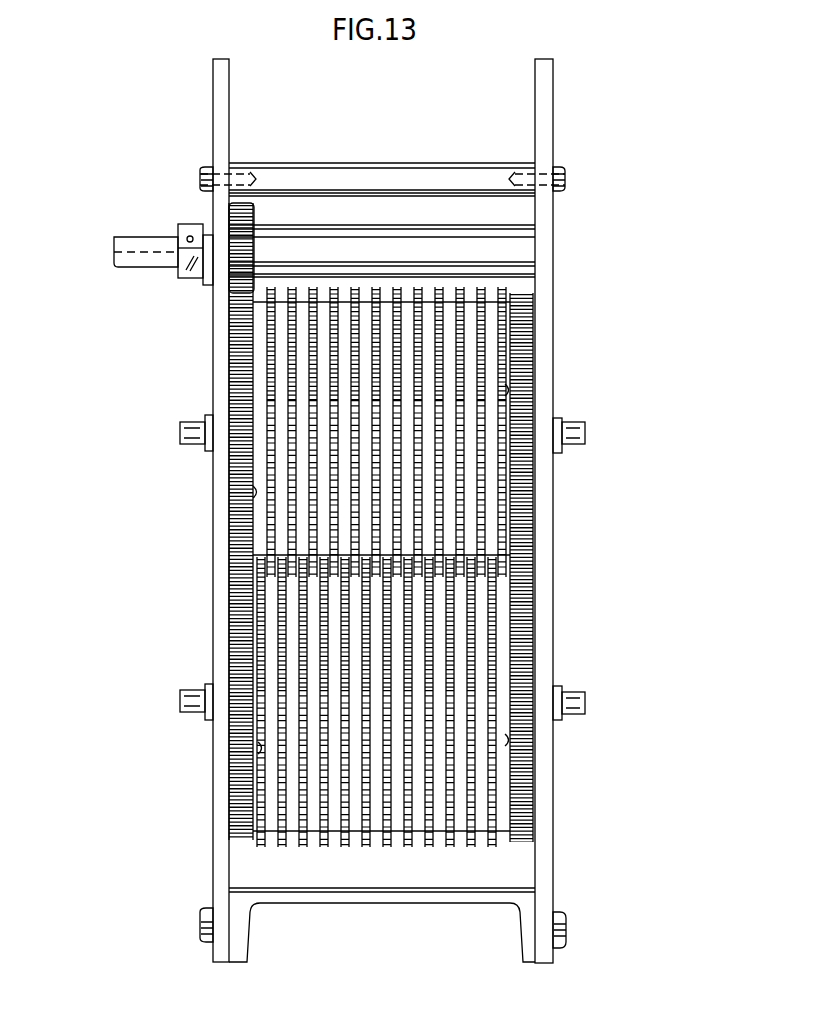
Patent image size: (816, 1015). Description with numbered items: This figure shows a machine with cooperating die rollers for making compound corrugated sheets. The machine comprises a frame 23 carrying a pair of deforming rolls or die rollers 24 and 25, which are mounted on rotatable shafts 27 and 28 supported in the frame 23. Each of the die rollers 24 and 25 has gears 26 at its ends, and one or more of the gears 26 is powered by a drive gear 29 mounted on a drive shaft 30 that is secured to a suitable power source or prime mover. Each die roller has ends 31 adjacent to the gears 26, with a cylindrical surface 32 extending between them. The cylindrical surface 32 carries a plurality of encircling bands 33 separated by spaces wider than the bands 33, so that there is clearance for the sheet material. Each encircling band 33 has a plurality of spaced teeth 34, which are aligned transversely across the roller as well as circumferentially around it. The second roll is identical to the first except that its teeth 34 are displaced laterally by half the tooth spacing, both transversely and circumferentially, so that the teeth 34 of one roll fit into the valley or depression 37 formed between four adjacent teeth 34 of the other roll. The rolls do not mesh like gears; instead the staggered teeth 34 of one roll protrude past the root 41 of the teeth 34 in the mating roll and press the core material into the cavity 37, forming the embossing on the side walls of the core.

The frame 23 is at (548, 592).
The die roller 24 is at (565, 344).
The die roller 25 is at (562, 650).
The gears 26 is at (232, 352).
The rotatable shaft 27 is at (586, 432).
The rotatable shaft 28 is at (588, 705).
The drive gear 29 is at (256, 218).
The drive shaft 30 is at (137, 265).
The ends 31 is at (507, 390).
The cylindrical surface 32 is at (512, 543).
The encircling bands 33 is at (421, 320).
The teeth 34 is at (268, 541).
The valley or depression 37 is at (297, 320).
The root 41 is at (490, 320).